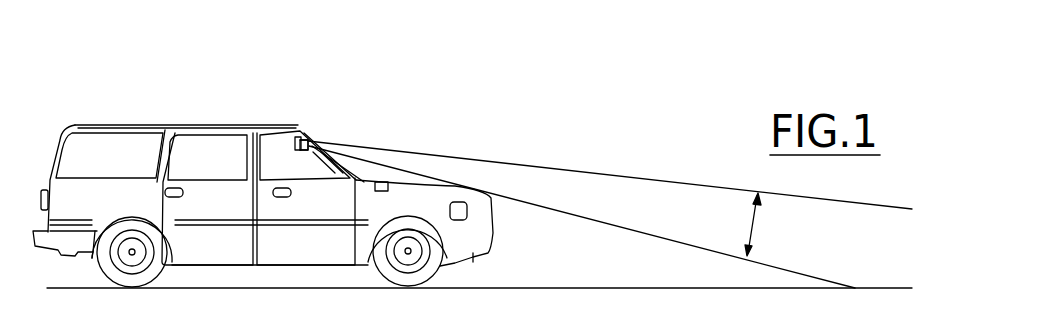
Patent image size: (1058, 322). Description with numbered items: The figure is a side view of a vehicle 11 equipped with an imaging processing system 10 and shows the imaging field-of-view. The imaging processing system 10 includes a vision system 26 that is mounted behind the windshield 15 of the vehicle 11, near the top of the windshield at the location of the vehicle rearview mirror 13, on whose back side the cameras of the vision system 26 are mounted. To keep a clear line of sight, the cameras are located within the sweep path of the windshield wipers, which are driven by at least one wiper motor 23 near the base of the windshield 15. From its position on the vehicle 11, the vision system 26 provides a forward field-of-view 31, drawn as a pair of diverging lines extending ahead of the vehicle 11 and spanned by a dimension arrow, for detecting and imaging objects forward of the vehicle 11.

The imaging processing system 10 is at (283, 101).
The vehicle 11 is at (145, 124).
The vehicle rearview mirror 13 is at (300, 134).
The vision system 26 is at (309, 137).
The windshield 15 is at (376, 181).
The wiper motor 23 is at (395, 182).
The forward field-of-view 31 is at (766, 224).